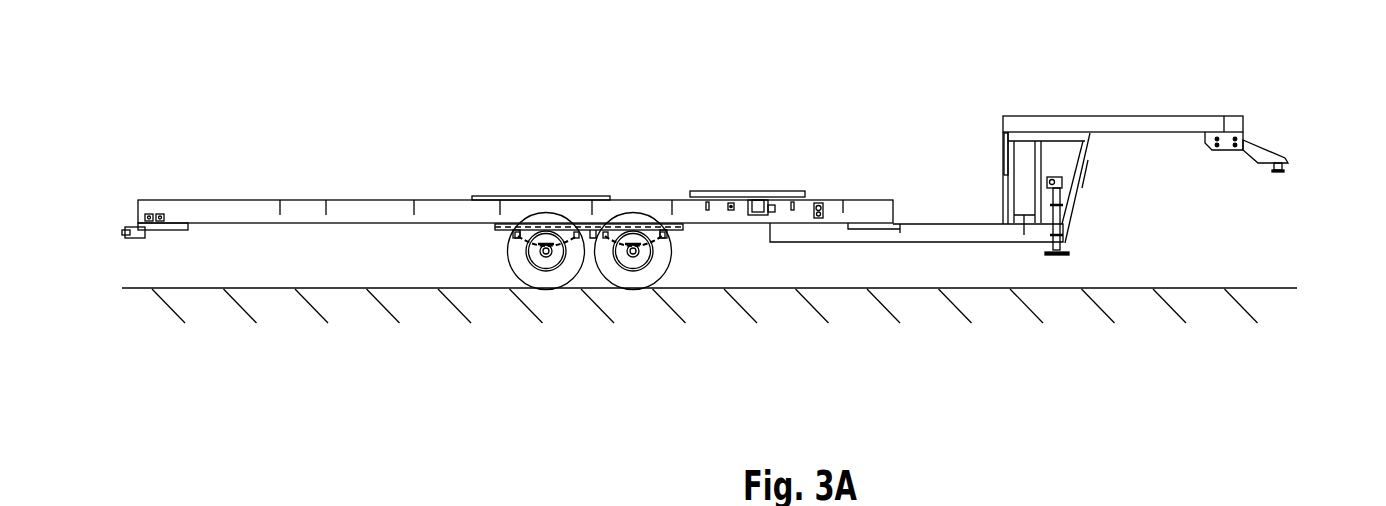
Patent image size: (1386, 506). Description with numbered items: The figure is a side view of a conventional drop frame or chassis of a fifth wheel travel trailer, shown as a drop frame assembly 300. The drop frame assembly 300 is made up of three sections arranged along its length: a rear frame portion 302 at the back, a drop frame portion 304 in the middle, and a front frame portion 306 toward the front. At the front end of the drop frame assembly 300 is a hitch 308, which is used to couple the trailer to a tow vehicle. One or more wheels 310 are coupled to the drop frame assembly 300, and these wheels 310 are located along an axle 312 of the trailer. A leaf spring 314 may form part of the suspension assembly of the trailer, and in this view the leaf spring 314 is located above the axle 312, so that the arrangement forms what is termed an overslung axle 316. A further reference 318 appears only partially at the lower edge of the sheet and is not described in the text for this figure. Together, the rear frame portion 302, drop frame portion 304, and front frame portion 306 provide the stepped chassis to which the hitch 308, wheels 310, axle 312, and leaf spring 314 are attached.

The drop frame assembly 300 is at (452, 122).
The rear frame portion 302 is at (327, 210).
The drop frame portion 304 is at (958, 228).
The front frame portion 306 is at (1137, 132).
The hitch 308 is at (1277, 170).
The wheels 310 is at (558, 277).
The axle 312 is at (633, 243).
The leaf spring 314 is at (523, 238).
The overslung axle 316 is at (660, 262).
The partially shown element 318 is at (376, 499).